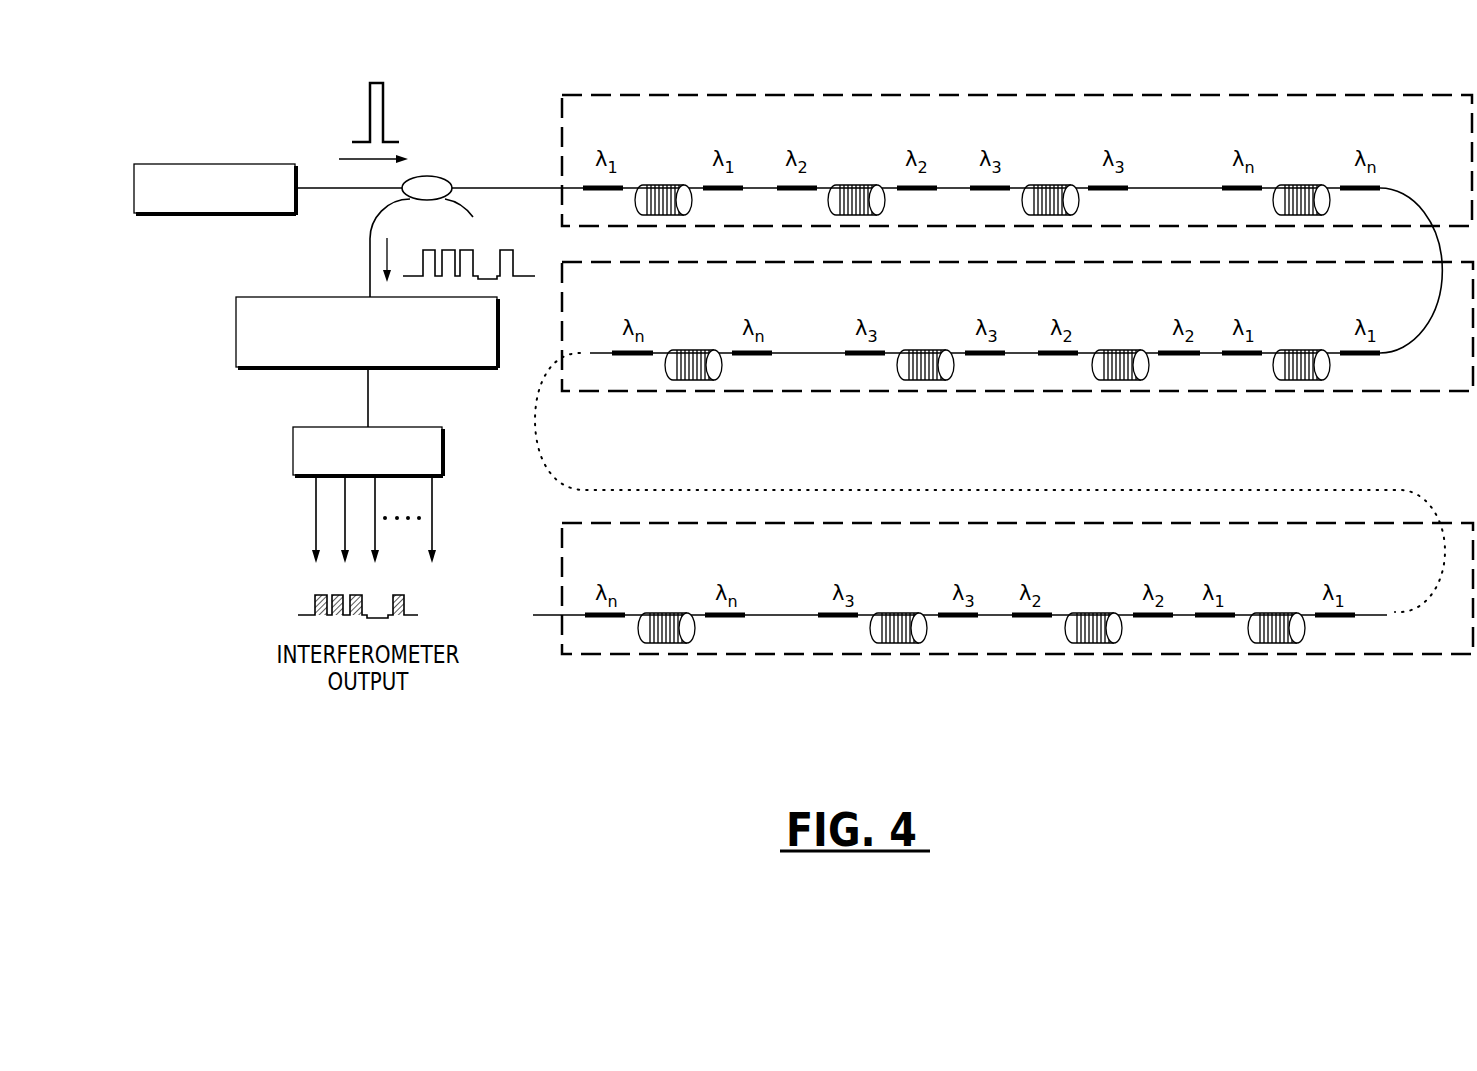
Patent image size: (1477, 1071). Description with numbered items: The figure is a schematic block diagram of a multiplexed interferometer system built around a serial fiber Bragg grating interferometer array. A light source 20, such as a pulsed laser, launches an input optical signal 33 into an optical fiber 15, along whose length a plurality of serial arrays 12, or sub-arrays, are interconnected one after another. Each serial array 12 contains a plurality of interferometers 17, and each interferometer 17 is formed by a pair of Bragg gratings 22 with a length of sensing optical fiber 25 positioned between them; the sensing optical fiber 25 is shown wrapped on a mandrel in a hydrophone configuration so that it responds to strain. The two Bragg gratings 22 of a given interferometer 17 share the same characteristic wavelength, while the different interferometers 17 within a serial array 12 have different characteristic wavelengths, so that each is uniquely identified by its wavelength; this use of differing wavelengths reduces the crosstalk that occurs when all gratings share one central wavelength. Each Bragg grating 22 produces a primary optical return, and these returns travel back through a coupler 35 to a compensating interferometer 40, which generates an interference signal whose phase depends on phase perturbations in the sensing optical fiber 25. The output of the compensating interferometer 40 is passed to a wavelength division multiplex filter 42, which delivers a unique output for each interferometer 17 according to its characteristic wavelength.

The light source 20 is at (163, 164).
The input optical signal 33 is at (377, 82).
The coupler 35 is at (427, 177).
The optical fiber 15 is at (533, 187).
The interferometer 17 is at (652, 135).
The serial array 12 is at (868, 95).
The Bragg gratings 22 is at (613, 192).
The sensing optical fiber 25 is at (665, 213).
The compensating interferometer 40 is at (236, 343).
The wavelength division multiplex filter 42 is at (293, 450).